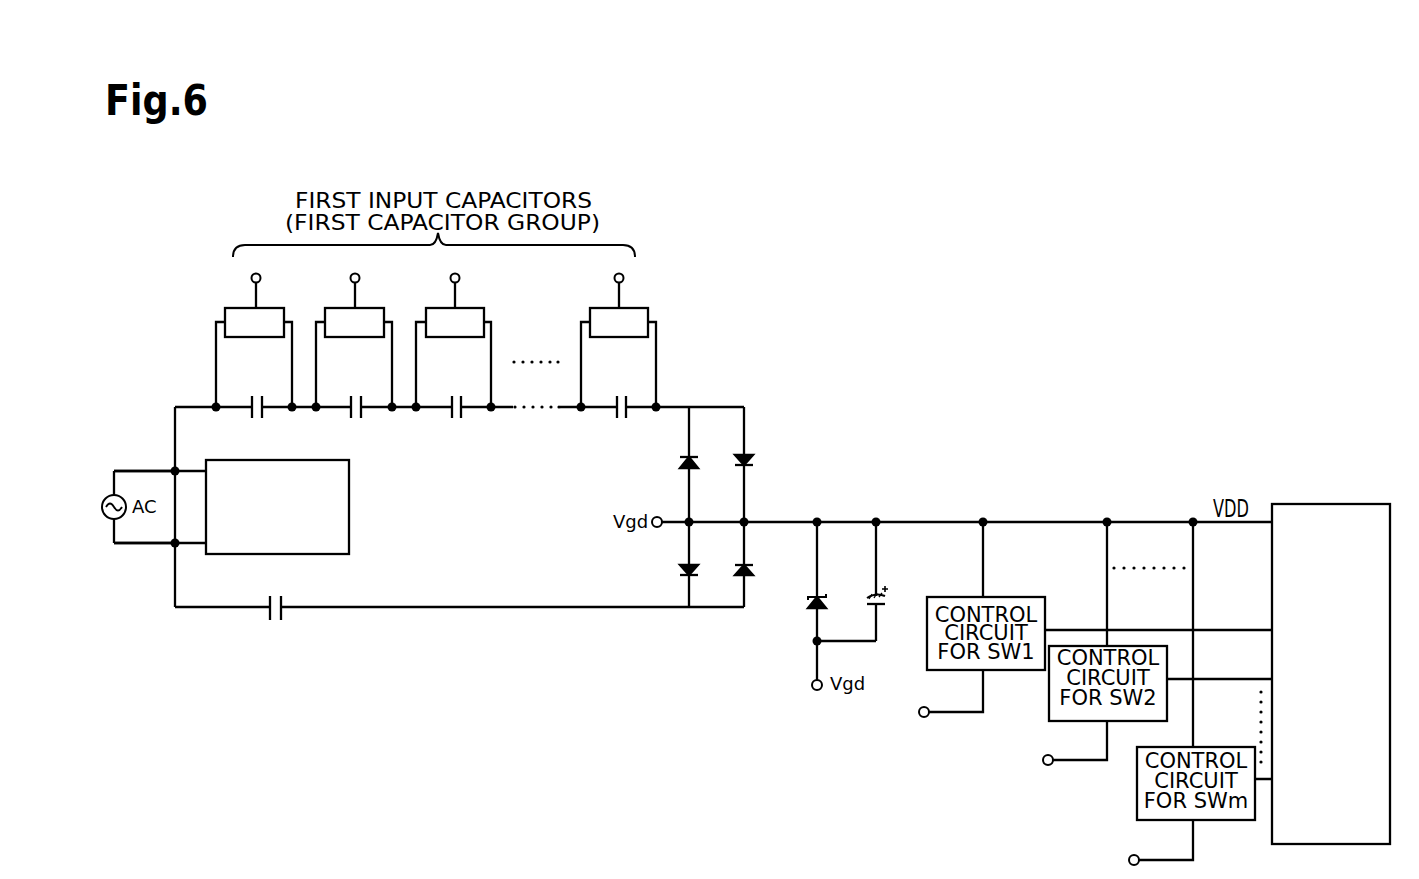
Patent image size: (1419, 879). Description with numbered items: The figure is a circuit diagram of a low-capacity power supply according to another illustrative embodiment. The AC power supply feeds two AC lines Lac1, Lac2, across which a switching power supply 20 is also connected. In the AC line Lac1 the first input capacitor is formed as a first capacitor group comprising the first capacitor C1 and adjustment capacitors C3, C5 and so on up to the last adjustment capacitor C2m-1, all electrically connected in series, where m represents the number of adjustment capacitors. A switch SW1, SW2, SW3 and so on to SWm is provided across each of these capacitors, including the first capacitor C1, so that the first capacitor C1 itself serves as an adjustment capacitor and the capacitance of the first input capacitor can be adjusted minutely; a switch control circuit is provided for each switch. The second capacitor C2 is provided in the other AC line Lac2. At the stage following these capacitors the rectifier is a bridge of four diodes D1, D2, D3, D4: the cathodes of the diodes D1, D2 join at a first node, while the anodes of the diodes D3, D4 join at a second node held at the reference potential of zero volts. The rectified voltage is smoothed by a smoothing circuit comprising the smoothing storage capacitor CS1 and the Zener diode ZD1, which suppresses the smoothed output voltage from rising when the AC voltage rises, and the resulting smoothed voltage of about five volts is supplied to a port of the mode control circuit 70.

The switching power supply 20 is at (349, 510).
The mode control circuit 70 is at (1334, 504).
The first capacitor C1 is at (254, 395).
The adjustment capacitor C3 is at (353, 395).
The adjustment capacitor C5 is at (453, 395).
The adjustment capacitor C2m-1 is at (619, 395).
The second capacitor C2 is at (270, 596).
The switch SW1 is at (254, 341).
The switch SW2 is at (354, 341).
The switch SW3 is at (453, 341).
The switch SWm is at (618, 341).
The diode D1 is at (748, 462).
The diode D2 is at (748, 573).
The diode D3 is at (693, 462).
The diode D4 is at (686, 568).
The Zener diode ZD1 is at (822, 608).
The smoothing storage capacitor CS1 is at (880, 606).
The AC line Lac1 is at (131, 470).
The AC line Lac2 is at (133, 544).